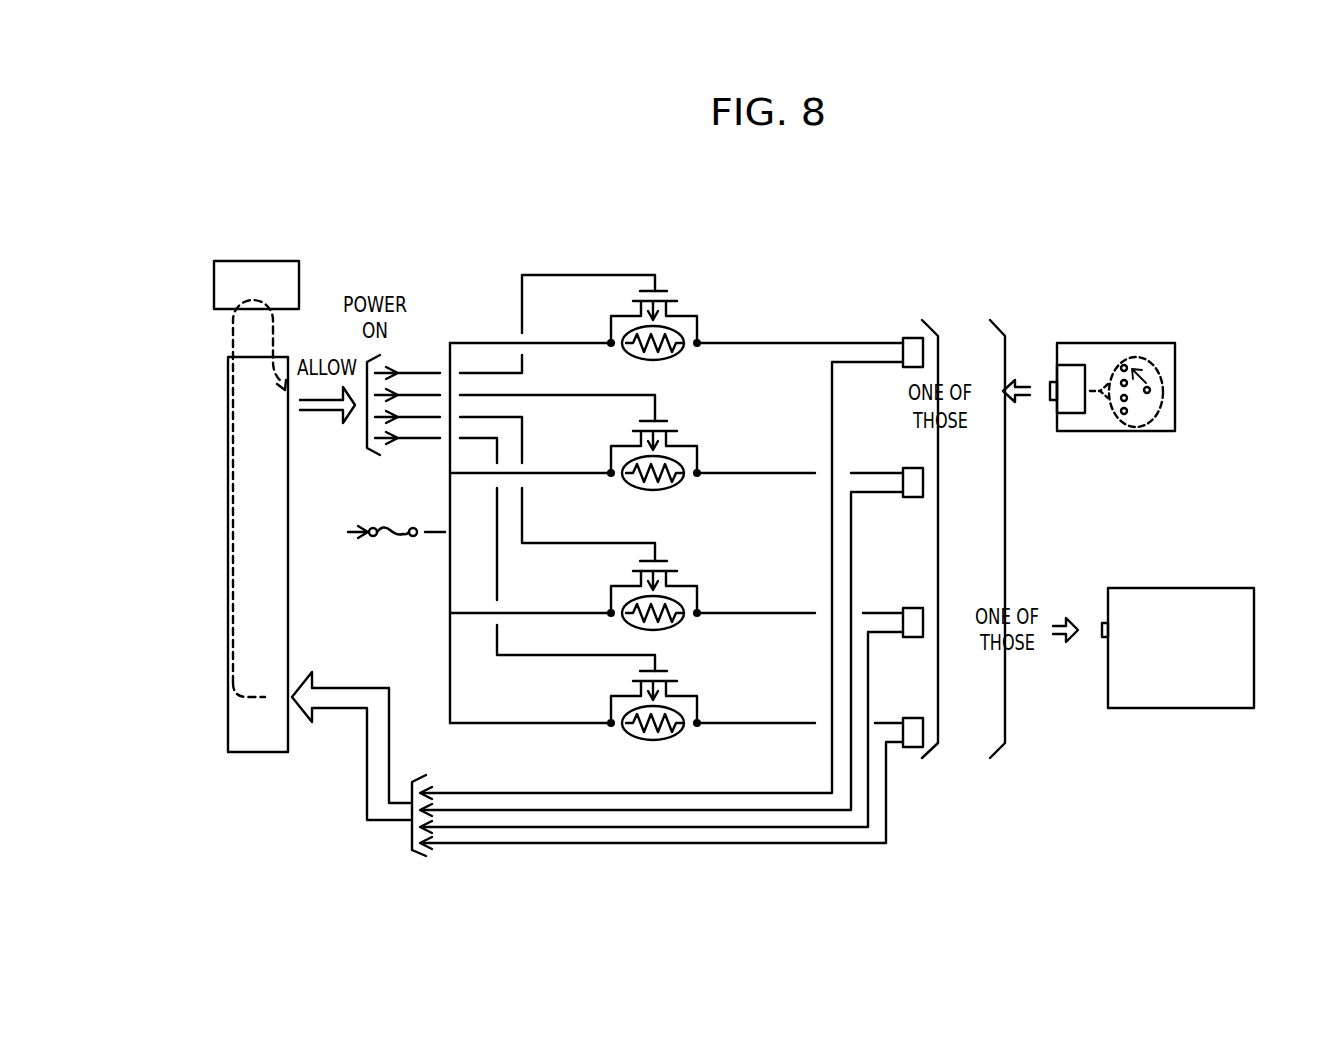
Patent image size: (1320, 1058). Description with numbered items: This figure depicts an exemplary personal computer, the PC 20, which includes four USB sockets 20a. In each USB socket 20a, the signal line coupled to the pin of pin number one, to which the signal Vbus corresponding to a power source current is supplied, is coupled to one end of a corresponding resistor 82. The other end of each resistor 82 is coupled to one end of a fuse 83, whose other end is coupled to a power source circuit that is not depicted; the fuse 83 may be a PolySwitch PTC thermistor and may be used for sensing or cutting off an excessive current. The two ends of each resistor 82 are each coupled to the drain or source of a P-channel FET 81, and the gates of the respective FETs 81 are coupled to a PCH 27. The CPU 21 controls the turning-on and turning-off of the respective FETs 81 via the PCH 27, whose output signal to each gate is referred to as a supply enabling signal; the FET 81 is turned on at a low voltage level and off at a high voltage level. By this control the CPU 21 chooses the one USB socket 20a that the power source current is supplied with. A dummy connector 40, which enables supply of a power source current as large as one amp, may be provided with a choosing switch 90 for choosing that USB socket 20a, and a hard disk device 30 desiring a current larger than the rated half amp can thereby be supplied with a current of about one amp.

The PC 20 is at (585, 226).
The USB socket 20a is at (913, 776).
The CPU 21 is at (257, 261).
The PCH 27 is at (228, 426).
The hard disk device 30 is at (1254, 648).
The dummy connector 40 is at (1138, 369).
The P-channel FET 81 is at (686, 293).
The resistor 82 is at (656, 361).
The fuse 83 is at (385, 522).
The choosing switch 90 is at (1162, 396).